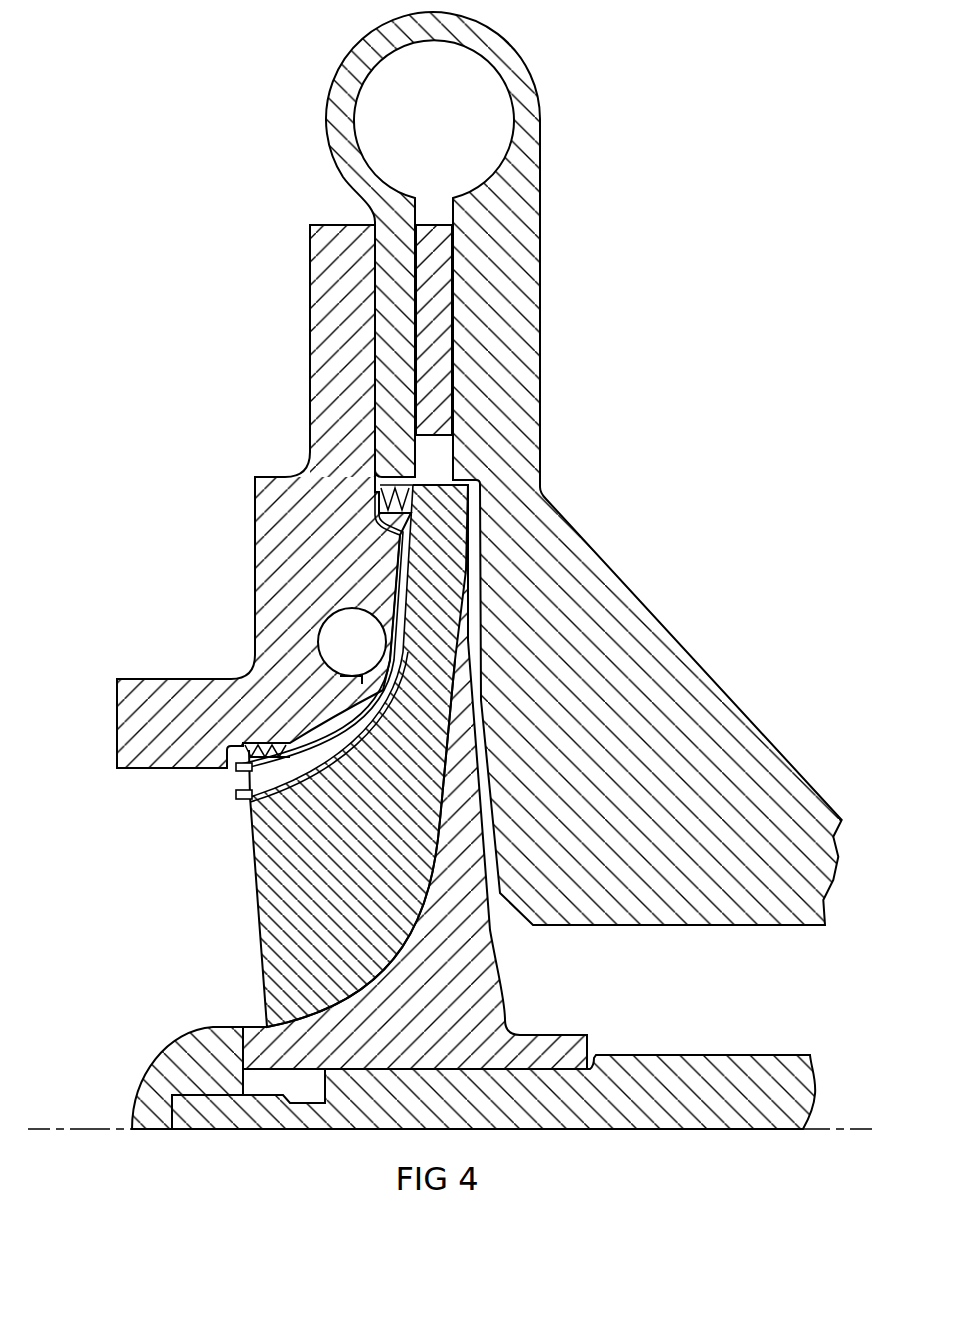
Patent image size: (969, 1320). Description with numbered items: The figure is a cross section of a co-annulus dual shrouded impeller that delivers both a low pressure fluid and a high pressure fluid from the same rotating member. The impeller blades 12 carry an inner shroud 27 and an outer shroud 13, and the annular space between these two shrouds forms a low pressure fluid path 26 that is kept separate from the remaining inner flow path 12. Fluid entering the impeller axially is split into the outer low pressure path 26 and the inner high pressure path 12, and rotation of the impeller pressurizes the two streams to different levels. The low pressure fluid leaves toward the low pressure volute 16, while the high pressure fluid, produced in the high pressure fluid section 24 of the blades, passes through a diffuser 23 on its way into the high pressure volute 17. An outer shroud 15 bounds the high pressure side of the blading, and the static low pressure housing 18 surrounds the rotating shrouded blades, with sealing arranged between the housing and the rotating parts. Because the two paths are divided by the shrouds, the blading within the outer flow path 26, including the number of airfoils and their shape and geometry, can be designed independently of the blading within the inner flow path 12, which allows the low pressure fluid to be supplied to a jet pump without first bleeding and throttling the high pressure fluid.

The full length blade 12 is at (306, 879).
The outer shroud 13 is at (240, 745).
The outer shroud 15 is at (410, 552).
The low pressure volute 16 is at (345, 641).
The high pressure volute 17 is at (450, 107).
The low pressure housing 18 is at (315, 531).
The diffuser 23 is at (433, 318).
The high pressure fluid section 24 is at (432, 597).
The low pressure fluid path 26 is at (243, 780).
The inner shroud 27 is at (257, 801).